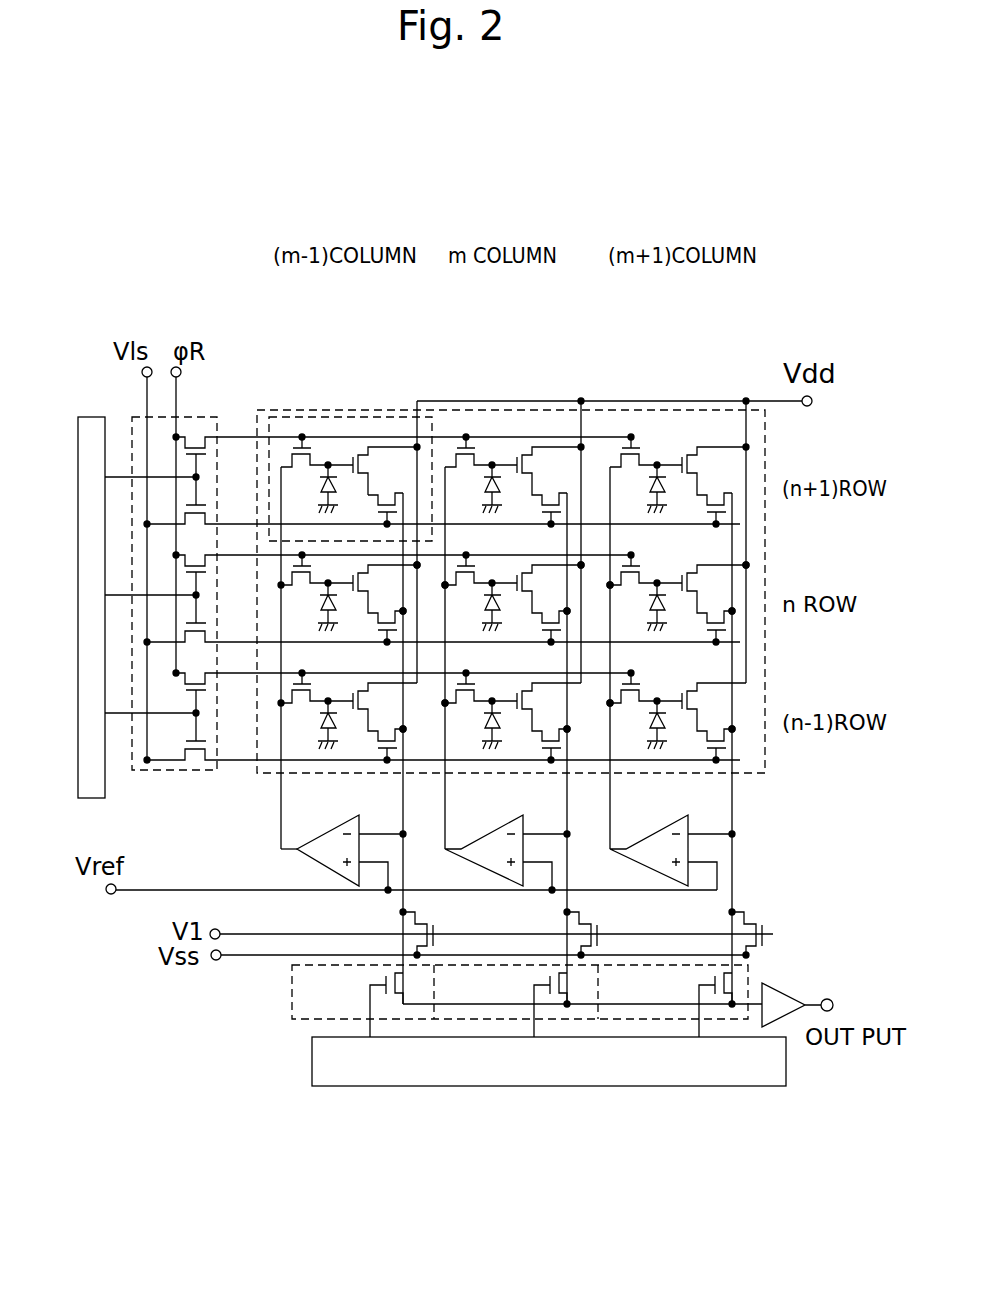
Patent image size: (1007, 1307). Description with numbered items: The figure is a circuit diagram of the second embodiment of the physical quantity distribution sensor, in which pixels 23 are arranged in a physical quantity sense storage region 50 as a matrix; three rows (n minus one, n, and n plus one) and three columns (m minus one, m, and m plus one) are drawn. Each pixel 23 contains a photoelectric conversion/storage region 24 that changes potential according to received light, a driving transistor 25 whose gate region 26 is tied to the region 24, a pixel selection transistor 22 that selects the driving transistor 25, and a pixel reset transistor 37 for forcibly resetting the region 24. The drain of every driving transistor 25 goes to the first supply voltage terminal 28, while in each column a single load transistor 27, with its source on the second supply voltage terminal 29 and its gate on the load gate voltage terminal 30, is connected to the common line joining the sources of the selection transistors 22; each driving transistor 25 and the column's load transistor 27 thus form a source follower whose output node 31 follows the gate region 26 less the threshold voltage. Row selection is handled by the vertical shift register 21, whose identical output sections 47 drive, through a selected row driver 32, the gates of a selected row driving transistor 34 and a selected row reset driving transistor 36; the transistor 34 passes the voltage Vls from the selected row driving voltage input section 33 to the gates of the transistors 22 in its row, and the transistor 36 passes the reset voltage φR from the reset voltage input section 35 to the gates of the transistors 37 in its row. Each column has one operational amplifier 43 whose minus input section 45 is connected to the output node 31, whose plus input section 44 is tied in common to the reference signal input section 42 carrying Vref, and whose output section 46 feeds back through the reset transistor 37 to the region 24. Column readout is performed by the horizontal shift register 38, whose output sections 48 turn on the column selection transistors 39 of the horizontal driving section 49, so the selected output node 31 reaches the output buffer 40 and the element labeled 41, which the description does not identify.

The vertical shift register 21 is at (108, 786).
The pixel selection transistor 22 is at (400, 418).
The pixel 23 is at (387, 505).
The photoelectric conversion/storage region 24 is at (306, 447).
The driving transistor 25 is at (370, 468).
The gate region of the driving transistor 26 is at (352, 461).
The load transistor 27 is at (425, 920).
The first supply voltage terminal 28 is at (803, 399).
The second supply voltage terminal 29 is at (213, 959).
The load gate voltage terminal 30 is at (219, 929).
The output node 31 is at (403, 813).
The selected row driver 32 is at (190, 772).
The selected row driving voltage input section 33 is at (143, 371).
The selected row driving transistor 34 is at (208, 521).
The reset voltage input section 35 is at (180, 371).
The selected row reset driving transistor 36 is at (200, 437).
The pixel reset transistor 37 is at (283, 466).
The horizontal shift register 38 is at (535, 1087).
The column selection transistor 39 is at (383, 977).
The output buffer 40 is at (780, 985).
The output terminal 41 is at (835, 1000).
The reference signal input section 42 is at (108, 893).
The operational amplifier 43 is at (310, 860).
The plus input section 44 is at (375, 863).
The minus input section 45 is at (372, 833).
The output section of the operational amplifier 46 is at (297, 846).
The output section of the vertical shift register 47 is at (122, 477).
The output section of the horizontal shift register 48 is at (368, 1028).
The horizontal driving section 49 is at (292, 988).
The physical quantity sense storage region 50 is at (517, 410).